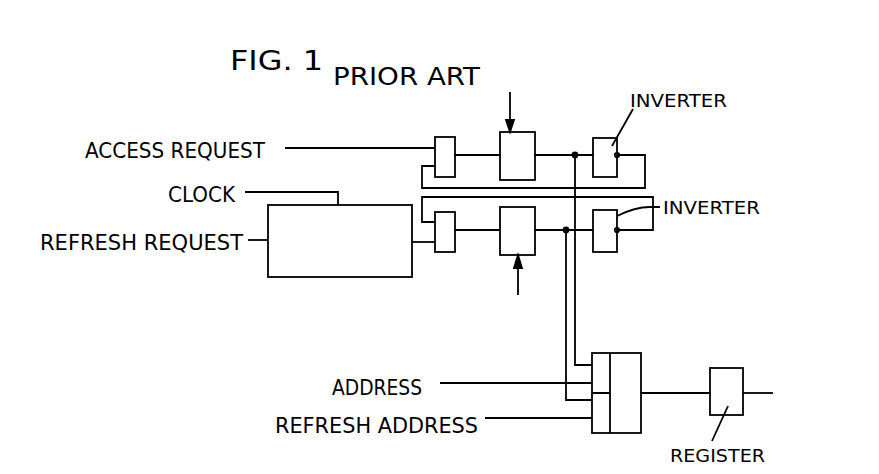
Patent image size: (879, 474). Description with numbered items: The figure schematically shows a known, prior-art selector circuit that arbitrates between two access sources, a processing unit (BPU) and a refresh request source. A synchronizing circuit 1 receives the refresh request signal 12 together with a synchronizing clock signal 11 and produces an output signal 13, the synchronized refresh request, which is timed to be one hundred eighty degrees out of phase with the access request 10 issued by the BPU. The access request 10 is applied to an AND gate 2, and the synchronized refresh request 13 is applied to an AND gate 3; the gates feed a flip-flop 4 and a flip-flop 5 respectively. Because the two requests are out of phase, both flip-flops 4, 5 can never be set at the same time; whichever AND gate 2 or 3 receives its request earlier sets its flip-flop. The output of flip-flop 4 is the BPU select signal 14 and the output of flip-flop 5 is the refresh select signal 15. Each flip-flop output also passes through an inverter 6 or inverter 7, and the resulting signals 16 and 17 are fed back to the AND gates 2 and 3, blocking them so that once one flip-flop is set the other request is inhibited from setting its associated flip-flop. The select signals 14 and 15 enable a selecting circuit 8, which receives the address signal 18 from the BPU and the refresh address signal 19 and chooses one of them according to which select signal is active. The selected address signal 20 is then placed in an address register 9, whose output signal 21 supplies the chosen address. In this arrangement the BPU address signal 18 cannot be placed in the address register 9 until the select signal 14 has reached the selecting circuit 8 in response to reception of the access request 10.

The synchronizing circuit 1 is at (390, 278).
The AND gate 2 is at (441, 137).
The AND gate 3 is at (455, 248).
The flip-flop 4 is at (512, 132).
The flip-flop 5 is at (500, 255).
The inverter 6 is at (600, 138).
The inverter 7 is at (600, 252).
The selecting circuit 8 is at (618, 353).
The address register 9 is at (727, 368).
The access request 10 is at (356, 148).
The synchronizing clock signal 11 is at (314, 172).
The refresh request signal 12 is at (260, 242).
The output signal from the synchronizing circuit 13 is at (425, 243).
The BPU select signal 14 is at (556, 130).
The refresh select signal 15 is at (556, 232).
The blocking signal 16 is at (638, 128).
The blocking signal 17 is at (644, 232).
The address signal from the BPU 18 is at (506, 383).
The refresh address signal 19 is at (522, 419).
The selected address signal 20 is at (665, 393).
The output signal from the address register 21 is at (756, 393).